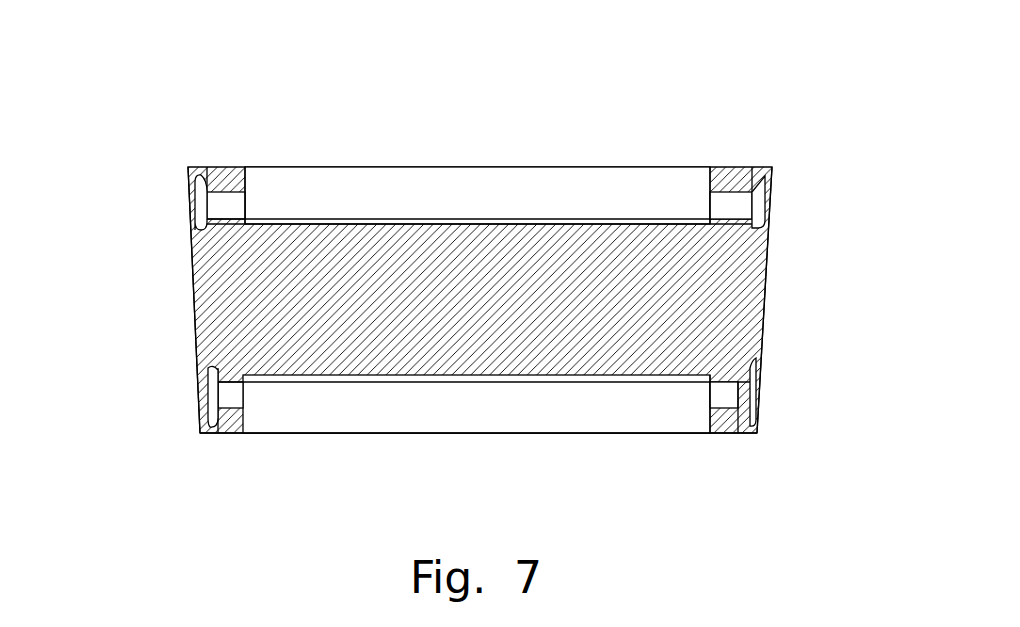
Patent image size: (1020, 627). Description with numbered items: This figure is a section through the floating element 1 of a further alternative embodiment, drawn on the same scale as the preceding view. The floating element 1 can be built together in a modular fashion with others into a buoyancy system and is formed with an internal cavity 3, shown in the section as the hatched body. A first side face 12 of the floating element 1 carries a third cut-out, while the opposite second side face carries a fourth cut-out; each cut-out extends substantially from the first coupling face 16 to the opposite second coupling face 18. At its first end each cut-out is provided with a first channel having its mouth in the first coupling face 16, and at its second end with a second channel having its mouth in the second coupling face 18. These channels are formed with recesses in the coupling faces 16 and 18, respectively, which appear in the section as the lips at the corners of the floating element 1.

The floating element 1 is at (228, 138).
The internal cavity 3 is at (603, 344).
The first side face 12 is at (360, 433).
The first coupling face 16 is at (190, 278).
The second coupling face 18 is at (763, 300).